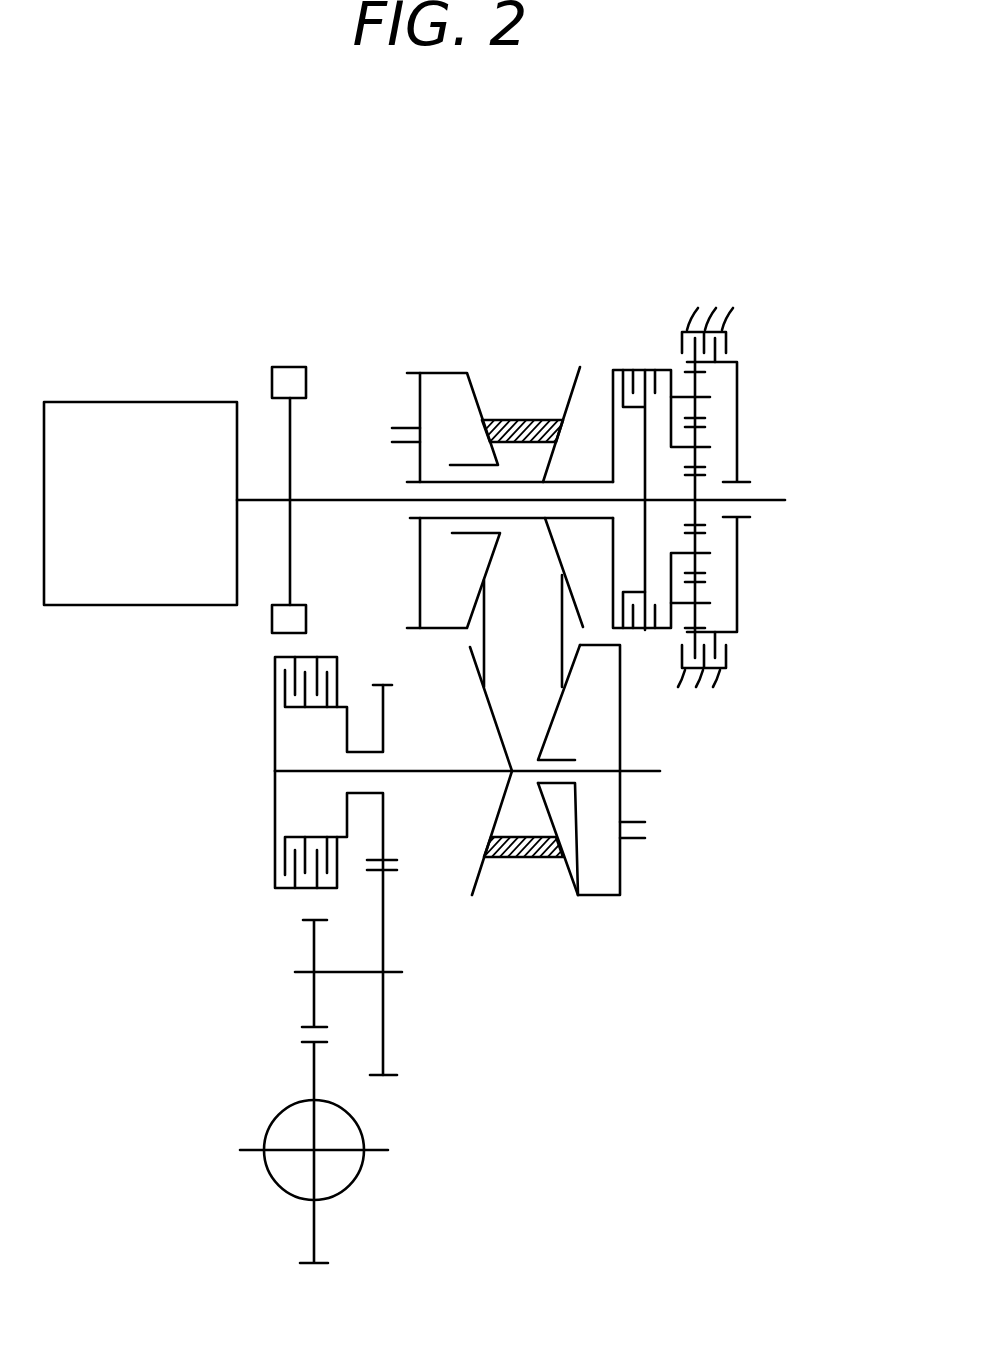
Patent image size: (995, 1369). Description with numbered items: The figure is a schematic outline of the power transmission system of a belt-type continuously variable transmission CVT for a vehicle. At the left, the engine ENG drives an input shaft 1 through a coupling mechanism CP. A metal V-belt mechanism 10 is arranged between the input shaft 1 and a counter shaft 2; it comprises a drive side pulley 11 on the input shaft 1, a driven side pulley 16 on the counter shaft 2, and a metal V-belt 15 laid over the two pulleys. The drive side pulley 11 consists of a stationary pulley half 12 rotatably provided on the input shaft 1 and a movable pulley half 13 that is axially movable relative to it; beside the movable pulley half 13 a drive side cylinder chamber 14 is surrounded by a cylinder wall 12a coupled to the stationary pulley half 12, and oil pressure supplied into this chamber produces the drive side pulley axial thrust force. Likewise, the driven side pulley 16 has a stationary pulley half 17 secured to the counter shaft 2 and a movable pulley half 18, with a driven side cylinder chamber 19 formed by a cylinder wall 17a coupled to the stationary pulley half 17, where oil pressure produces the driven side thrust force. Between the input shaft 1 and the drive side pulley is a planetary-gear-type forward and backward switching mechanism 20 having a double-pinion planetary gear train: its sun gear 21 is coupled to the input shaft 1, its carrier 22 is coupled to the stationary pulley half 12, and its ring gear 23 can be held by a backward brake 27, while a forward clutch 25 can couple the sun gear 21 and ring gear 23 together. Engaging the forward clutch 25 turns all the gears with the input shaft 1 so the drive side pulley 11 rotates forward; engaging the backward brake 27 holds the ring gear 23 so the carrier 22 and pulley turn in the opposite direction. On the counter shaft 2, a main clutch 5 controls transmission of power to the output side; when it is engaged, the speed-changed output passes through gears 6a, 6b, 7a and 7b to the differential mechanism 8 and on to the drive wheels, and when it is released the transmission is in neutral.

The input shaft 1 is at (352, 515).
The counter shaft 2 is at (438, 773).
The main clutch 5 is at (266, 859).
The gear 6a is at (387, 698).
The gear 6b is at (395, 1074).
The gear 7a is at (314, 940).
The gear 7b is at (314, 1063).
The differential mechanism 8 is at (351, 1187).
The metal V-belt mechanism 10 is at (465, 455).
The drive side pulley 11 is at (443, 365).
The stationary pulley half 12 is at (571, 380).
The cylinder wall 12a is at (420, 465).
The movable pulley half 13 is at (472, 385).
The drive side cylinder chamber 14 is at (436, 439).
The metal V-belt 15 is at (483, 632).
The driven side pulley 16 is at (586, 770).
The stationary pulley half 17 is at (488, 893).
The cylinder wall 17a is at (621, 733).
The movable pulley half 18 is at (568, 877).
The driven side cylinder chamber 19 is at (574, 727).
The planetary-gear-type forward and backward switching mechanism 20 is at (738, 471).
The sun gear 21 is at (697, 490).
The carrier 22 is at (673, 410).
The ring gear 23 is at (737, 368).
The forward clutch 25 is at (636, 371).
The backward brake 27 is at (730, 340).
The coupling mechanism CP is at (288, 366).
The engine ENG is at (165, 515).
The continuously variable transmission CVT is at (588, 214).